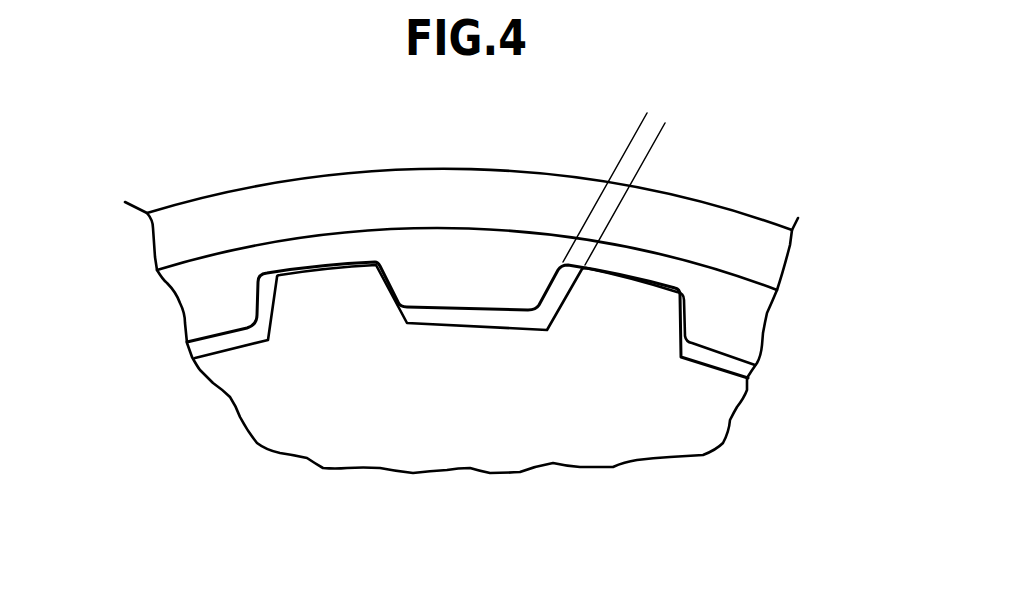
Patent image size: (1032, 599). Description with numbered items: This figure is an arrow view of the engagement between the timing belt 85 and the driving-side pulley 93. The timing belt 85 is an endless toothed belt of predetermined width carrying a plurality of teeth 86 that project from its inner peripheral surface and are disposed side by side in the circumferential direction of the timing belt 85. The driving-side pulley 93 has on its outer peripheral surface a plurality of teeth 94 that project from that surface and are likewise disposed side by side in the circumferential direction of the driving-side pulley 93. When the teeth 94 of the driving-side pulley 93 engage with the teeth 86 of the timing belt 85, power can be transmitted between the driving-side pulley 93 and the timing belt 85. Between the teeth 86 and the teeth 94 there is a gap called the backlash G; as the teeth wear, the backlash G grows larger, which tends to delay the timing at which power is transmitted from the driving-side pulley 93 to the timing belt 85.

The timing belt 85 is at (384, 190).
The teeth 86 is at (468, 282).
The driving-side pulley 93 is at (633, 417).
The teeth 94 is at (652, 297).
The backlash G is at (702, 153).